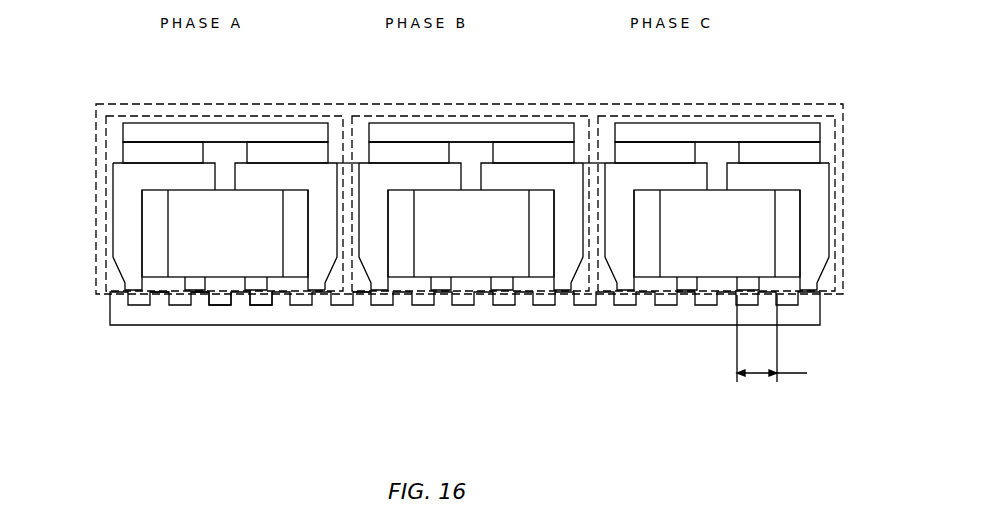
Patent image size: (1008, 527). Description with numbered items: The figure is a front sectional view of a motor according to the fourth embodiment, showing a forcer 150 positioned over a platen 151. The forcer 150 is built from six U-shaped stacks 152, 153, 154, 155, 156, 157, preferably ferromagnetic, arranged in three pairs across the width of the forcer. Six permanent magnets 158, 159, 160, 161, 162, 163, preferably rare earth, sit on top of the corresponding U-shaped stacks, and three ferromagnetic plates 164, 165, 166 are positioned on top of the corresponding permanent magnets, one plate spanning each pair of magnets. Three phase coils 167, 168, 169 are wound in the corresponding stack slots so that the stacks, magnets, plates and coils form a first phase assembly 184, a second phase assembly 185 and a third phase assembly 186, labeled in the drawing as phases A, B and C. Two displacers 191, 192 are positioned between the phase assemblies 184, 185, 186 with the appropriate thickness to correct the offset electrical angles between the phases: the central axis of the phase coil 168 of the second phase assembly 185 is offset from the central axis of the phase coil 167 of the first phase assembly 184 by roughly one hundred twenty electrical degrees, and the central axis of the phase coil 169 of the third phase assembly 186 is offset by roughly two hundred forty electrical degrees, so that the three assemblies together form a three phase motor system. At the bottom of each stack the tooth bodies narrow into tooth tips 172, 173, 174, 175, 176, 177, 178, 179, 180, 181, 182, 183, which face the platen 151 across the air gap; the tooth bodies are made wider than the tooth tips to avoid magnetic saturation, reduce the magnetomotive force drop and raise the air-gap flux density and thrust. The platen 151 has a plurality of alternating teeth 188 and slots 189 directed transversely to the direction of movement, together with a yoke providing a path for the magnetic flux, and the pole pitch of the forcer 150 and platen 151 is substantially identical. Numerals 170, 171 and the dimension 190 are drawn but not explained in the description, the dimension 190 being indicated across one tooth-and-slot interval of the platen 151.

The forcer 150 is at (827, 130).
The platen 151 is at (627, 317).
The U-shaped stack 152 is at (137, 180).
The U-shaped stack 153 is at (328, 177).
The U-shaped stack 154 is at (398, 152).
The U-shaped stack 155 is at (563, 200).
The U-shaped stack 156 is at (682, 130).
The U-shaped stack 157 is at (788, 183).
The permanent magnet 158 is at (137, 153).
The permanent magnet 159 is at (263, 152).
The permanent magnet 160 is at (373, 178).
The permanent magnet 161 is at (510, 160).
The permanent magnet 162 is at (630, 153).
The permanent magnet 163 is at (760, 155).
The ferromagnetic plate 164 is at (185, 117).
The ferromagnetic plate 165 is at (457, 133).
The ferromagnetic plate 166 is at (658, 178).
The phase coil 167 is at (178, 253).
The phase coil 168 is at (477, 254).
The phase coil 169 is at (758, 263).
The phase A module boundary 170 is at (128, 247).
The phase C coil side 171 is at (812, 198).
The tooth tip 172 is at (128, 290).
The tooth tip 173 is at (198, 297).
The tooth tip 174 is at (248, 295).
The tooth tip 175 is at (322, 286).
The tooth tip 176 is at (352, 298).
The tooth tip 177 is at (380, 288).
The tooth tip 178 is at (448, 288).
The tooth tip 179 is at (502, 288).
The tooth tip 180 is at (625, 286).
The tooth tip 181 is at (683, 286).
The tooth tip 182 is at (740, 290).
The tooth tip 183 is at (810, 286).
The first phase assembly 184 is at (213, 133).
The second phase assembly 185 is at (440, 117).
The third phase assembly 186 is at (720, 115).
The teeth 188 is at (190, 297).
The slots 189 is at (260, 303).
The tooth pitch 190 is at (788, 339).
The displacer 191 is at (342, 286).
The displacer 192 is at (583, 283).